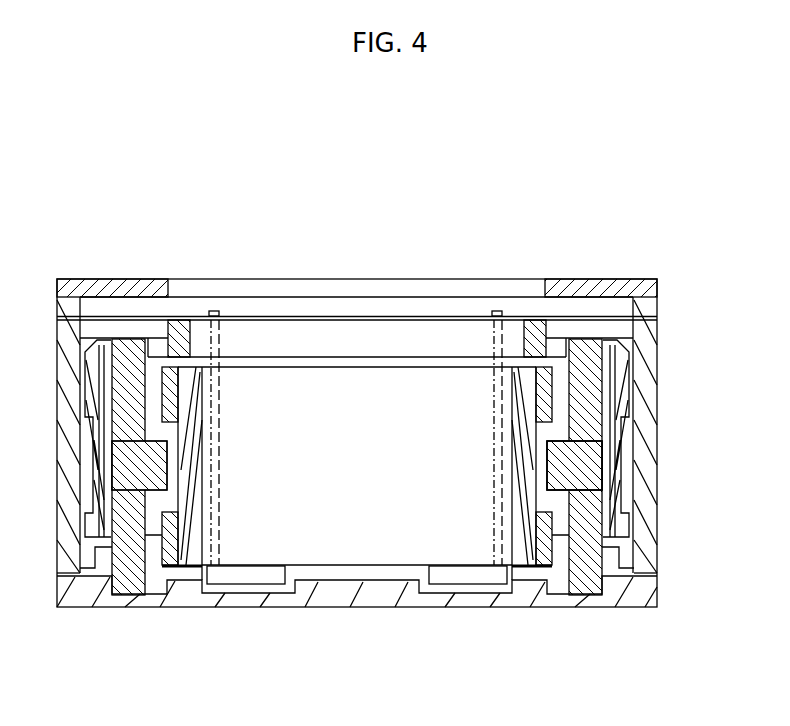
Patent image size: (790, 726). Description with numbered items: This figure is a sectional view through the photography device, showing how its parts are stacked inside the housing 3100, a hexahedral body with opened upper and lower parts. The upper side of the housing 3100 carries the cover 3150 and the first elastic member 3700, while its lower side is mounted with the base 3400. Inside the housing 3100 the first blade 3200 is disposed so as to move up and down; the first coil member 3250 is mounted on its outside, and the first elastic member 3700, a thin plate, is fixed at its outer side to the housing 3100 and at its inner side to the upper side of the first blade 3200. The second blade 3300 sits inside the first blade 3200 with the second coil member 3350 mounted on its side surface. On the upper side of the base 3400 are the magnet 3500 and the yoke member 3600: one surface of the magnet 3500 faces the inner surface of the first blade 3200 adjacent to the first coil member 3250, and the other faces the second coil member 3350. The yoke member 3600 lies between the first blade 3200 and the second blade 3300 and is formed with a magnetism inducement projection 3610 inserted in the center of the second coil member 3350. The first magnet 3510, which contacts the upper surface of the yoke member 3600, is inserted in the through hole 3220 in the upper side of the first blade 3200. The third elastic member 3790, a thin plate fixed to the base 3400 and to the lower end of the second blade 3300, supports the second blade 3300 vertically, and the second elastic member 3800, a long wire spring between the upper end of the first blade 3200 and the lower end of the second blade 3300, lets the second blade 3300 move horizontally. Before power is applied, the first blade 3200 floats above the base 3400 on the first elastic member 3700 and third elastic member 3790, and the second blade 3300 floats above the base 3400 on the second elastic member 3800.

The housing 3100 is at (648, 363).
The cover 3150 is at (593, 288).
The first blade 3200 is at (622, 392).
The through hole 3220 is at (145, 314).
The first coil member 3250 is at (628, 465).
The second blade 3300 is at (520, 548).
The second coil member 3350 is at (542, 548).
The base 3400 is at (628, 598).
The magnet 3500 is at (121, 320).
The first magnet 3510 is at (588, 568).
The yoke member 3600 is at (590, 480).
The magnetism inducement projection 3610 is at (546, 444).
The first elastic member 3700 is at (179, 316).
The third elastic member 3790 is at (188, 568).
The second elastic member 3800 is at (220, 517).